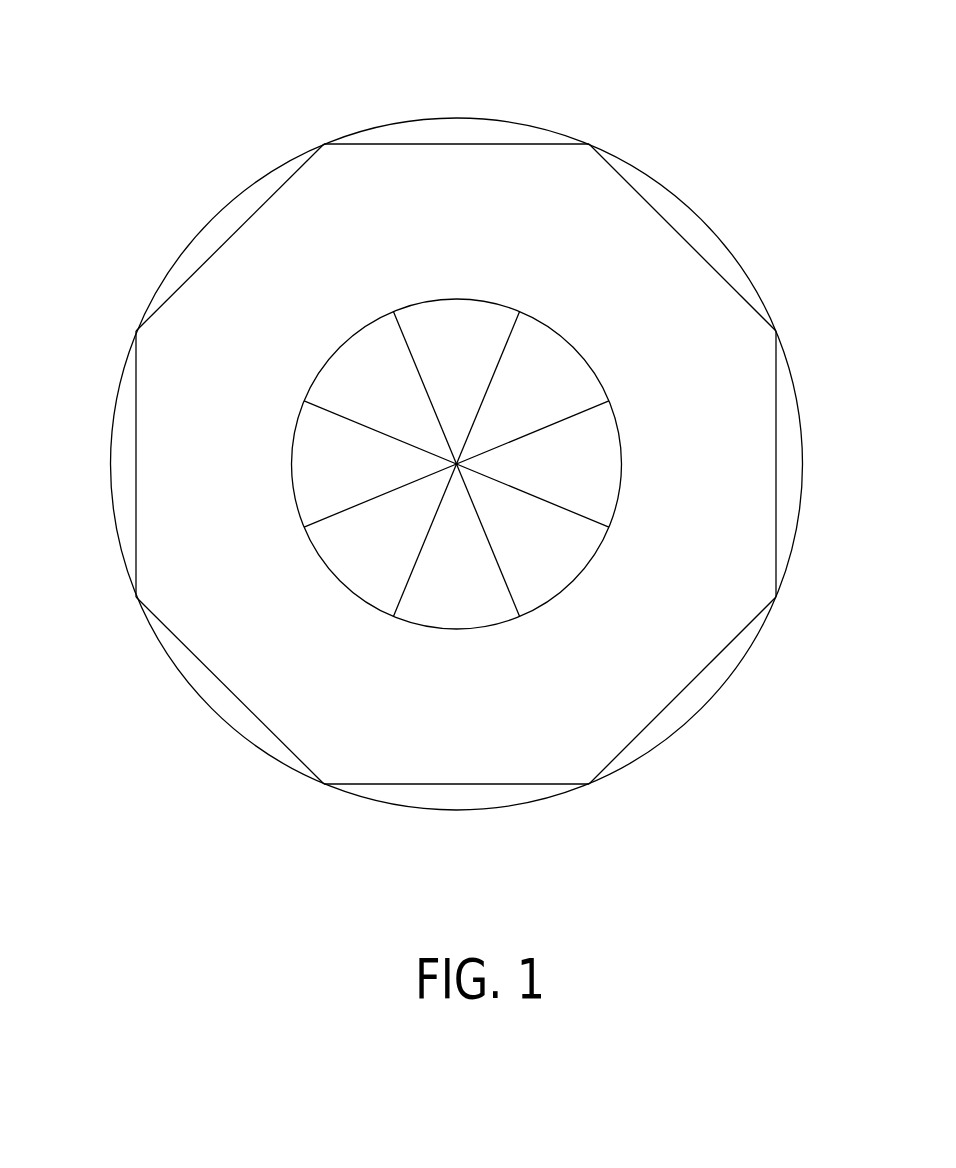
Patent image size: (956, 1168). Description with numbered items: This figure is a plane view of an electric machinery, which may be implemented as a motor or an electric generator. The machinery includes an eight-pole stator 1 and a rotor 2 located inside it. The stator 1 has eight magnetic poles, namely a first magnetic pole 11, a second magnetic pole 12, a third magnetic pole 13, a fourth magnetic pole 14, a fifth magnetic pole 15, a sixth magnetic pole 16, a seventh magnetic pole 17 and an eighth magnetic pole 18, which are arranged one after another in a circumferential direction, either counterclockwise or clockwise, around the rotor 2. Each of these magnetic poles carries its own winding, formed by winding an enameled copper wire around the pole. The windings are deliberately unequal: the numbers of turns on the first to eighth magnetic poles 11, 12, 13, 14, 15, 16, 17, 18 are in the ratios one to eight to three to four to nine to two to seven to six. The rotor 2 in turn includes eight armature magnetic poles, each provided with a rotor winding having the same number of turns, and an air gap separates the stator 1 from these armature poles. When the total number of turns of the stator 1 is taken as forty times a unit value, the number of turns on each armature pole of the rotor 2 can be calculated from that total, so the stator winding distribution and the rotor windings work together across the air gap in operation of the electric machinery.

The 8-pole stator 1 is at (617, 127).
The rotor 2 is at (358, 355).
The first magnetic pole 11 is at (460, 130).
The second magnetic pole 12 is at (717, 252).
The third magnetic pole 13 is at (793, 447).
The fourth magnetic pole 14 is at (690, 703).
The fifth magnetic pole 15 is at (452, 800).
The sixth magnetic pole 16 is at (222, 702).
The seventh magnetic pole 17 is at (122, 437).
The eighth magnetic pole 18 is at (223, 217).